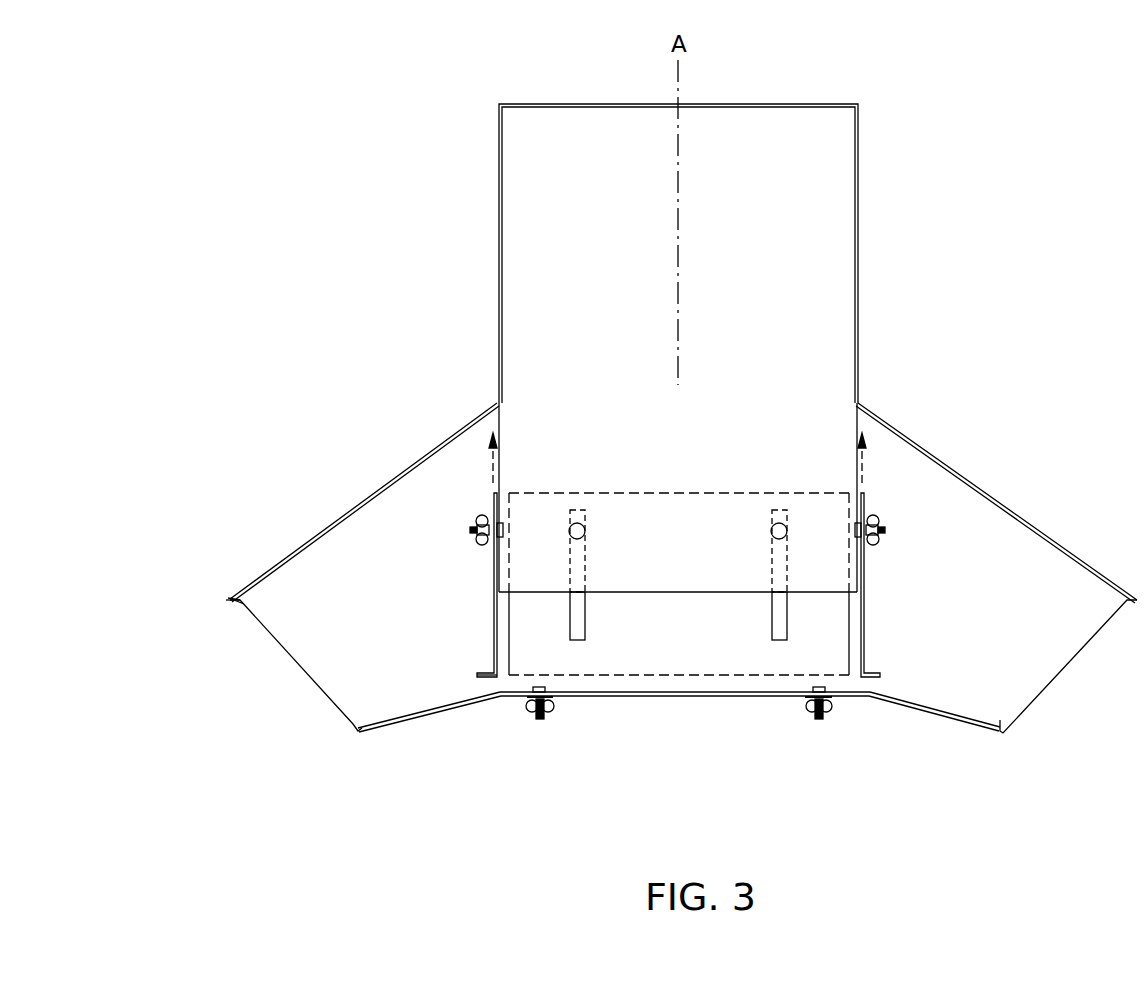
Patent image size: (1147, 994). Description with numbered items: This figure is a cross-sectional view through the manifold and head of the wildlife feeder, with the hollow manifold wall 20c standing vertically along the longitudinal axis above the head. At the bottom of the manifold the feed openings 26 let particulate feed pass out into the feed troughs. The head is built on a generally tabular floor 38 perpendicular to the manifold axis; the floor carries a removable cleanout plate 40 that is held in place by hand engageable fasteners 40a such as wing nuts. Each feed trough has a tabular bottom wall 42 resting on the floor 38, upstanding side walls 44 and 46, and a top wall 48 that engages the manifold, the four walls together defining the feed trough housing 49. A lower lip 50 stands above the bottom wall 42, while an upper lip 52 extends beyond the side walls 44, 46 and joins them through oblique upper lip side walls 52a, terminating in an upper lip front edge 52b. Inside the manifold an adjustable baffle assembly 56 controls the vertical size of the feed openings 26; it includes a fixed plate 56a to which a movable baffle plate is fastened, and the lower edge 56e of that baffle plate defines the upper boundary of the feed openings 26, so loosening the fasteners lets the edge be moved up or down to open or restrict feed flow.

The rear wall of hopper 20c is at (678, 348).
The feed opening 26 is at (718, 675).
The floor 38 is at (638, 695).
The removable cleanout plate 40 is at (697, 698).
The hand engageable fastener 40a is at (553, 710).
The bottom wall 42 is at (408, 720).
The side wall 44 is at (970, 612).
The side wall 46 is at (402, 612).
The top wall 48 is at (378, 487).
The feed trough housing 49 is at (1064, 537).
The lower lip 50 is at (352, 725).
The upper lip 52 is at (230, 599).
The upper lip side wall 52a is at (232, 601).
The upper lip front edge 52b is at (230, 599).
The adjustable baffle assembly 56 is at (717, 503).
The fixed plate 56a is at (443, 648).
The lower edge 56e is at (487, 680).